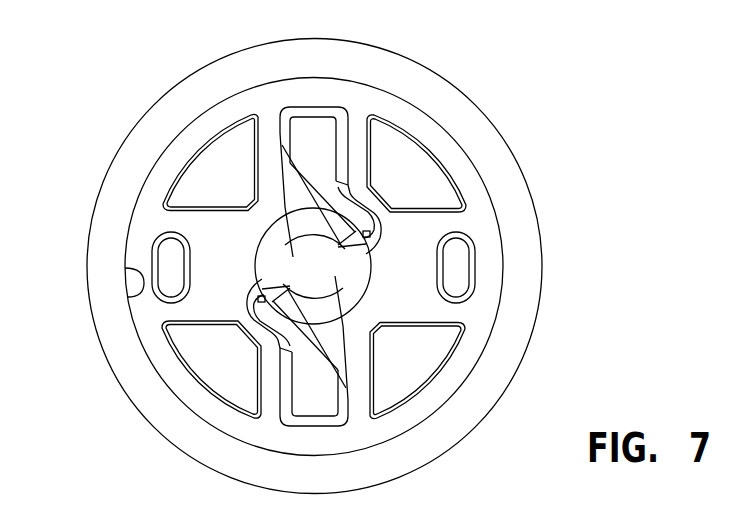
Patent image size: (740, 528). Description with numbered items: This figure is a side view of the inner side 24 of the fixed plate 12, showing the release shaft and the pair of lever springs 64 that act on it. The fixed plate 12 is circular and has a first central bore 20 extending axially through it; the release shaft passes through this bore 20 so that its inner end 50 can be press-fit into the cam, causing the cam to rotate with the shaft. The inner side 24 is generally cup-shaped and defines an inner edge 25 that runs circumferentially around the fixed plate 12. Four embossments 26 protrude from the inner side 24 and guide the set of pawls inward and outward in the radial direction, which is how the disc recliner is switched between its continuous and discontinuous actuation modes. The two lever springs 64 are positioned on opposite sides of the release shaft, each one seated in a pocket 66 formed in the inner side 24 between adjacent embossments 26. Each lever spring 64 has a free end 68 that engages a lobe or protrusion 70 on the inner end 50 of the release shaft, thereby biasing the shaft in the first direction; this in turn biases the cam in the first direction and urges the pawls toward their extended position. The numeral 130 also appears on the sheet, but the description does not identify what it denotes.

The fixed plate 12 is at (457, 86).
The first central bore 20 is at (362, 291).
The inner side 24 is at (421, 296).
The inner edge 25 is at (127, 298).
The embossments 26 is at (225, 165).
The inner end 50 is at (313, 271).
The lever springs 64 is at (332, 111).
The pocket 66 is at (305, 131).
The free end 68 is at (360, 227).
The lobe or protrusion 70 is at (357, 255).
The assembly 130 is at (354, 523).